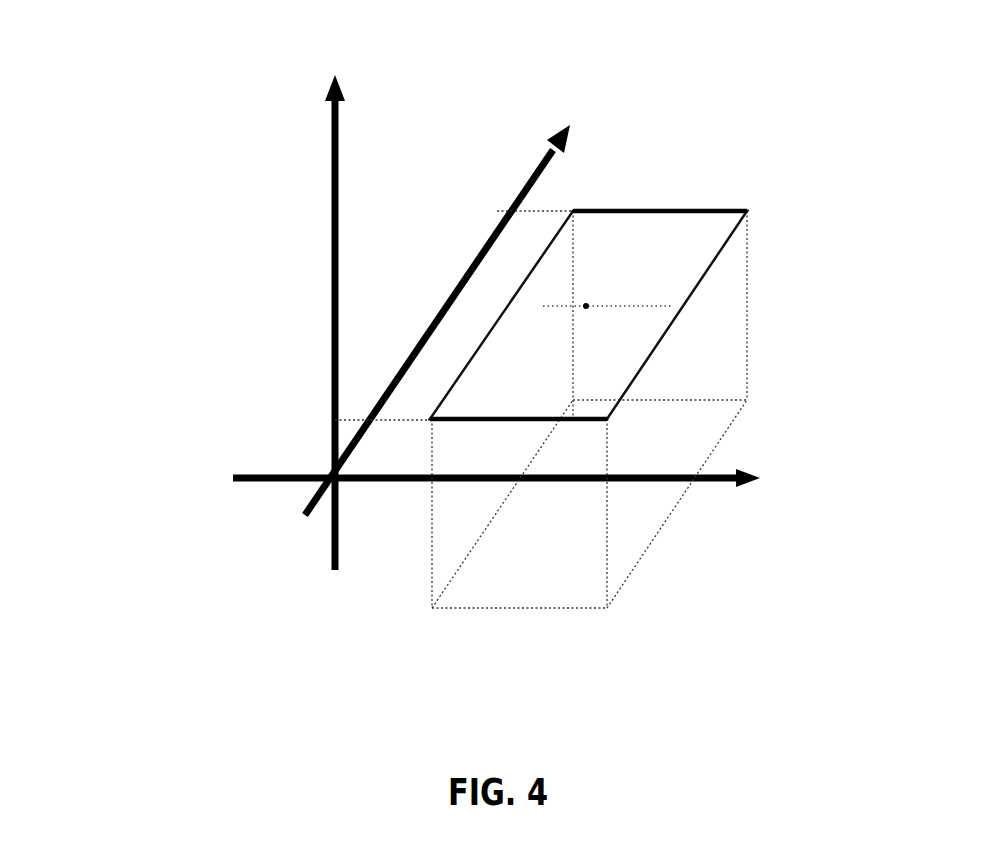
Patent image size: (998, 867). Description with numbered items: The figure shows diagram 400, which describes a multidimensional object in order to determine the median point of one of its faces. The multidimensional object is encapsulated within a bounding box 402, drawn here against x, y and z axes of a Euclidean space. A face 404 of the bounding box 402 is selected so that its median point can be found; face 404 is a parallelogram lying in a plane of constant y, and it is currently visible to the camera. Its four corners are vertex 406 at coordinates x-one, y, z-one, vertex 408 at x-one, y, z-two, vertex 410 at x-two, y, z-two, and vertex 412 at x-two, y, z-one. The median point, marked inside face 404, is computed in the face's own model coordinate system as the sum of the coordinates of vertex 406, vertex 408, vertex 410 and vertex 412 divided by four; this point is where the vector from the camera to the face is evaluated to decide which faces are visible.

The diagram 400 is at (607, 417).
The bounding box 402 is at (723, 327).
The face 404 is at (667, 291).
The vertex 406 is at (428, 417).
The vertex 408 is at (573, 211).
The vertex 410 is at (748, 211).
The vertex 412 is at (607, 419).